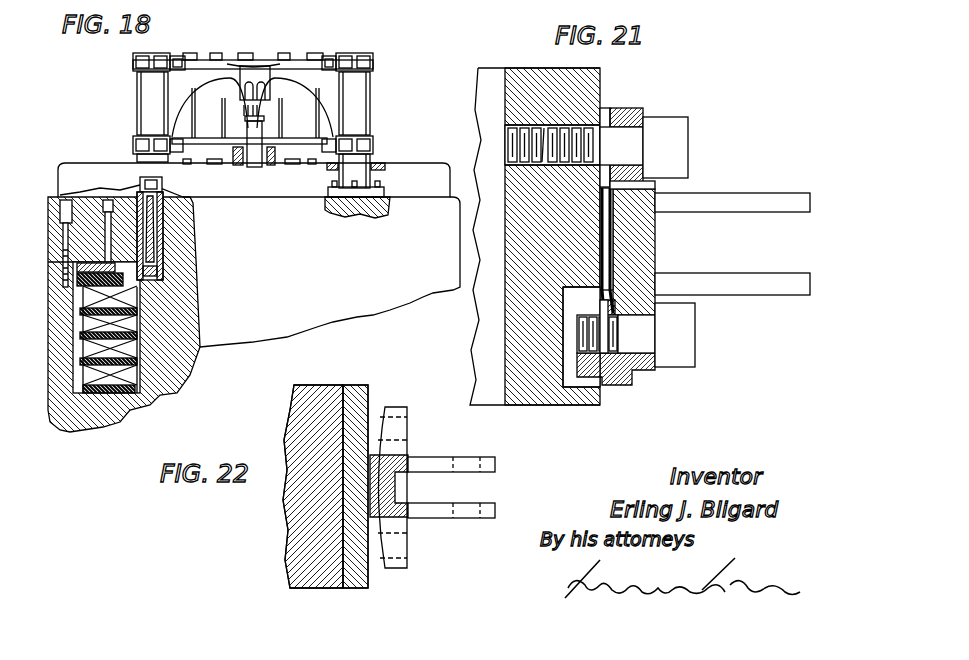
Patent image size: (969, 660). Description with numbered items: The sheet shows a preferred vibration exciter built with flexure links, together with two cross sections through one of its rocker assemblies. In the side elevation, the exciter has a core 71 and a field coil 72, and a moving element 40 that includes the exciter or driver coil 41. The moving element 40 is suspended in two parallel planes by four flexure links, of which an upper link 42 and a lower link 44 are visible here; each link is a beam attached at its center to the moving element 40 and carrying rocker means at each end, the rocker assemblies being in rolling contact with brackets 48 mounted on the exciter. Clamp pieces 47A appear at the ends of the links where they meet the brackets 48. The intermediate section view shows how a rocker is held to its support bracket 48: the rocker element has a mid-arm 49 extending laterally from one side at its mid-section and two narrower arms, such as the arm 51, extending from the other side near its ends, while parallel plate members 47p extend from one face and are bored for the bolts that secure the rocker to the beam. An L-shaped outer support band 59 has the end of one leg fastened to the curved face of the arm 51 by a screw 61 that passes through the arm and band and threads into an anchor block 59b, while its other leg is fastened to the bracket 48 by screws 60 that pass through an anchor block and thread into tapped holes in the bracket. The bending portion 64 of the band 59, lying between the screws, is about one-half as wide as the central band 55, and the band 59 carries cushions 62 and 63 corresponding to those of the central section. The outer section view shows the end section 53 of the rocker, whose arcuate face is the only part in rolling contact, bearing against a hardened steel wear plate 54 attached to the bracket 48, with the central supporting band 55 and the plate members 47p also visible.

In FIG. 18, the moving element 40 is at (403, 116).
In FIG. 18, the exciter or driver coil 41 is at (150, 232).
In FIG. 18, the upper flexure link 42 is at (297, 62).
In FIG. 18, the lower flexure link 44 is at (293, 143).
In FIG. 18, the clamp blocks 47A is at (173, 62).
In FIG. 21, the parallel plate members 47p is at (756, 205).
In FIG. 18, the support bracket 48 is at (165, 56).
In FIG. 22, the support bracket 48 is at (297, 522).
In FIG. 21, the mid-arm 49 is at (656, 185).
In FIG. 21, the arm 51 is at (652, 372).
In FIG. 22, the arm 51 is at (397, 567).
In FIG. 22, the end section 53 is at (408, 456).
In FIG. 22, the wear plate 54 is at (358, 393).
In FIG. 22, the central supporting band 55 is at (398, 408).
In FIG. 21, the outer support band 59 is at (606, 108).
In FIG. 21, the anchor block 59b is at (605, 388).
In FIG. 21, the screw 60 is at (684, 137).
In FIG. 21, the screw 61 is at (686, 350).
In FIG. 21, the cushion 62 is at (613, 109).
In FIG. 21, the cushion 63 is at (612, 240).
In FIG. 21, the bending portion 64 is at (613, 260).
In FIG. 18, the core 71 is at (51, 412).
In FIG. 18, the field coil 72 is at (127, 392).